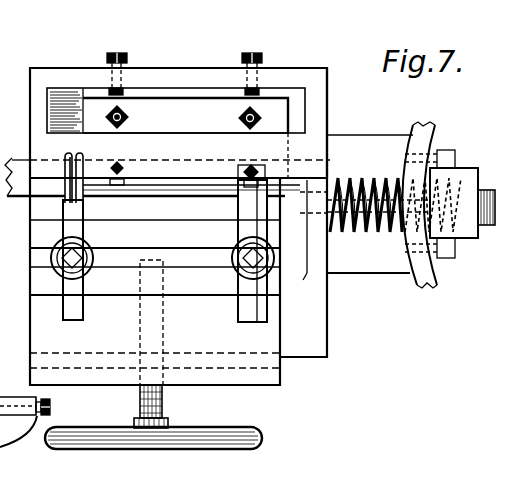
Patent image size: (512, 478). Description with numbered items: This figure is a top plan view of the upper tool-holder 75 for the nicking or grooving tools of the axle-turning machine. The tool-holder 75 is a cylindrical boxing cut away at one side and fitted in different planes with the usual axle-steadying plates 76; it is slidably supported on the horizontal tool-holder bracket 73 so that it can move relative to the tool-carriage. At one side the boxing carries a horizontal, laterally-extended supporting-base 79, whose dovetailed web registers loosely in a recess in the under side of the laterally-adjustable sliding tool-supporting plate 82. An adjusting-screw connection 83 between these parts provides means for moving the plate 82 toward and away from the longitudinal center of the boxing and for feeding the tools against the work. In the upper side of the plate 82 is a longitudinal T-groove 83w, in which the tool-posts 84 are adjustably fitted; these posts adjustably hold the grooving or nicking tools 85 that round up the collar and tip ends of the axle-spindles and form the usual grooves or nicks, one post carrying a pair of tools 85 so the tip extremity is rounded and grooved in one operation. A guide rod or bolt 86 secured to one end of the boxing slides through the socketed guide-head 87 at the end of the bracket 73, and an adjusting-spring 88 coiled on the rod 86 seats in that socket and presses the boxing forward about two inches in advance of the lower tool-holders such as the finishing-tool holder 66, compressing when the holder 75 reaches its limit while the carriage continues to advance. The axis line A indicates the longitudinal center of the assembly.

The upper tool-holder 75 is at (164, 74).
The axle-steadying plates 76 is at (185, 138).
The axis line A is at (16, 168).
The laterally-adjustable sliding tool-supporting plate 82 is at (178, 269).
The longitudinal T-groove 83w is at (181, 262).
The grooving or nicking tools 85 is at (67, 310).
The tool-posts 84 is at (53, 264).
The supporting-base 79 is at (313, 331).
The guide rod or bolt 86 is at (363, 192).
The adjusting-spring 88 is at (362, 226).
The tool-holder bracket 73 is at (438, 280).
The socketed guide-head 87 is at (462, 178).
The adjusting-screw connection 83 is at (163, 410).
The lower tool-holder 66 is at (1, 441).